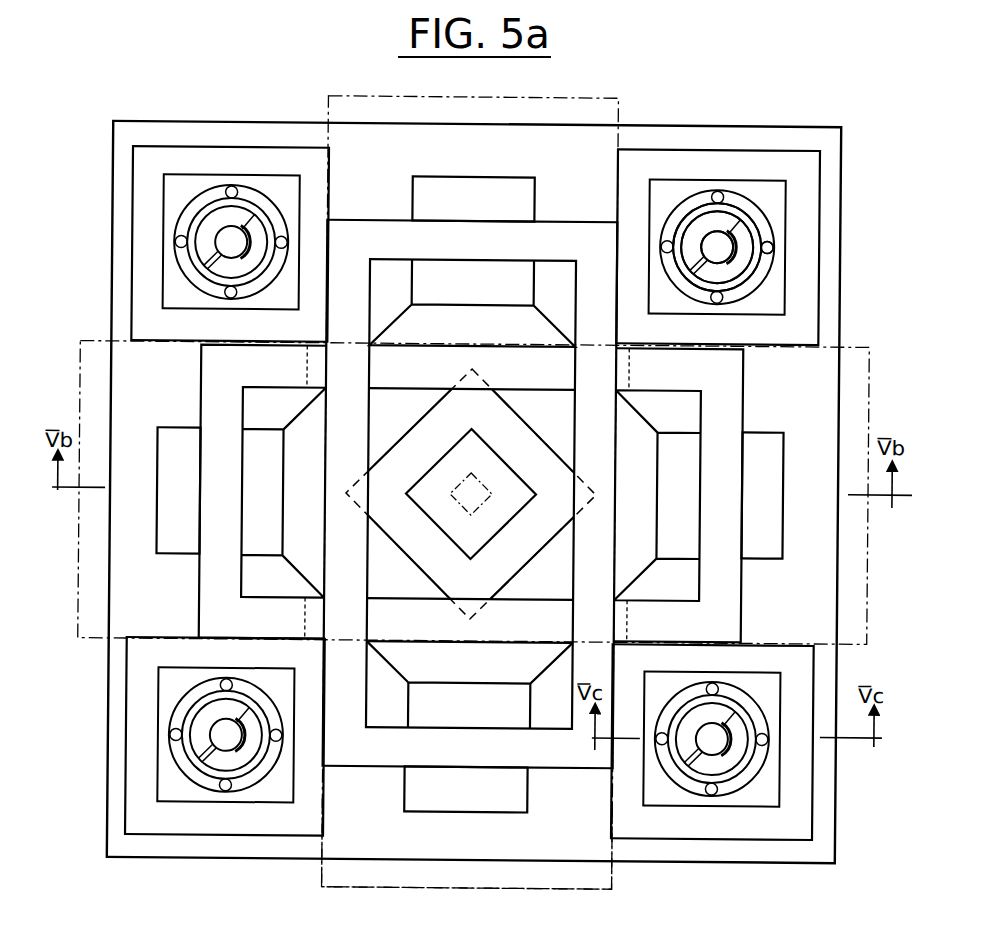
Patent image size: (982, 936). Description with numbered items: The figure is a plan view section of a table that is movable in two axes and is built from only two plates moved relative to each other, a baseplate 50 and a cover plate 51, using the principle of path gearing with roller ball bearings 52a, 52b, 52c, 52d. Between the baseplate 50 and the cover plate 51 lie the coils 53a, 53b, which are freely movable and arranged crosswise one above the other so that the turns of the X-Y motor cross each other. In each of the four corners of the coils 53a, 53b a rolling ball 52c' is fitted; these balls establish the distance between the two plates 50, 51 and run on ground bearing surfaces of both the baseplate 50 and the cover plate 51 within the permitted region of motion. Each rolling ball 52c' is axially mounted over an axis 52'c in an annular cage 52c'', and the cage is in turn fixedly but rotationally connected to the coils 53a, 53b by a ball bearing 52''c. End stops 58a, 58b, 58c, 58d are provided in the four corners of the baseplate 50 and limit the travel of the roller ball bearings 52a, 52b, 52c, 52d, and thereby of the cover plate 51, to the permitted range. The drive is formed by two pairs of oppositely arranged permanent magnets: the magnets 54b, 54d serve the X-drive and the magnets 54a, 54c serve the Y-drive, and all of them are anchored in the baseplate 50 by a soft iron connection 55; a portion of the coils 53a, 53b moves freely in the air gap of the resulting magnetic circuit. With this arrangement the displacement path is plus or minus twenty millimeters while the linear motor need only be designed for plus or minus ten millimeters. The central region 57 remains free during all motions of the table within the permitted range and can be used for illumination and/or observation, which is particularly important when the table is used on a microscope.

The baseplate 50 is at (363, 843).
The cover plate 51 is at (616, 99).
The roller ball bearing 52a is at (215, 767).
The roller ball bearing 52b is at (732, 778).
The roller ball bearing 52c is at (769, 248).
The roller ball bearing 52d is at (247, 183).
The axis 52'c is at (718, 186).
The rolling ball 52c' is at (744, 176).
The annular cage 52c'' is at (763, 190).
The ball bearing 52''c is at (830, 263).
The coil 53a is at (557, 752).
The coil 53b is at (729, 593).
The permanent magnet for the Y-drive 54a is at (483, 798).
The permanent magnet for the X-drive 54b is at (770, 439).
The permanent magnet for the Y-drive 54c is at (519, 194).
The permanent magnet for the X-drive 54d is at (162, 443).
The soft iron connection 55 is at (416, 662).
The central region 57 is at (477, 493).
The end stop 58a is at (123, 846).
The end stop 58b is at (815, 847).
The end stop 58c is at (829, 175).
The end stop 58d is at (154, 133).